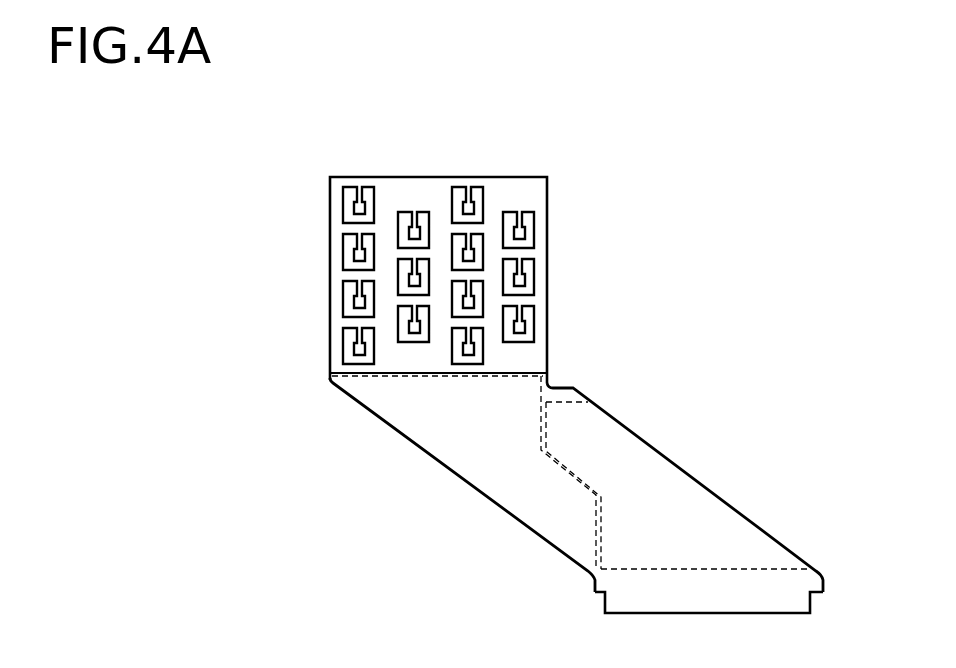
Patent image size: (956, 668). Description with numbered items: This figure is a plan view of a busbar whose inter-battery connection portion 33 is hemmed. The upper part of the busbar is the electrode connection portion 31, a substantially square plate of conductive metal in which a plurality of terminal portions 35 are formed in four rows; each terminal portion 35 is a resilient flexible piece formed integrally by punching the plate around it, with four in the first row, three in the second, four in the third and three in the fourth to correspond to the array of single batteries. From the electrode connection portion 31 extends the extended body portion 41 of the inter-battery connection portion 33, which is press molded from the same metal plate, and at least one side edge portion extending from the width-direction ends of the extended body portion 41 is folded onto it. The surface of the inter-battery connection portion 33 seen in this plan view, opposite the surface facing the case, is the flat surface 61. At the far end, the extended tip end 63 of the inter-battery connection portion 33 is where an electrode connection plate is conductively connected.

The electrode connection portion 31 is at (507, 178).
The terminal portions 35 is at (348, 205).
The extended body portion 41 is at (405, 413).
The flat surface 61 is at (517, 479).
The inter-battery connection portion 33 is at (680, 467).
The extended tip end 63 is at (712, 613).